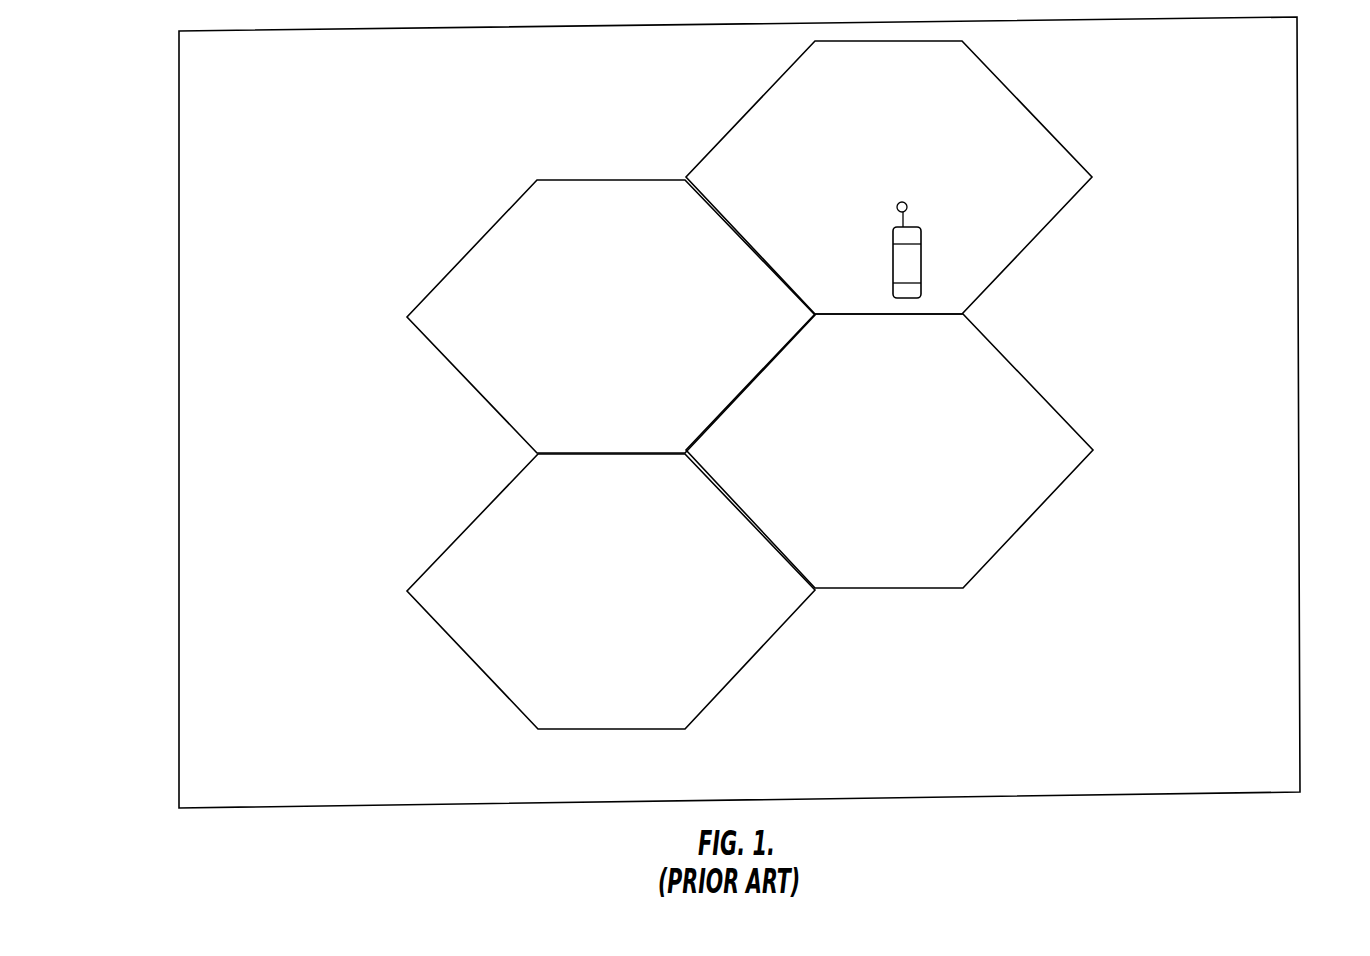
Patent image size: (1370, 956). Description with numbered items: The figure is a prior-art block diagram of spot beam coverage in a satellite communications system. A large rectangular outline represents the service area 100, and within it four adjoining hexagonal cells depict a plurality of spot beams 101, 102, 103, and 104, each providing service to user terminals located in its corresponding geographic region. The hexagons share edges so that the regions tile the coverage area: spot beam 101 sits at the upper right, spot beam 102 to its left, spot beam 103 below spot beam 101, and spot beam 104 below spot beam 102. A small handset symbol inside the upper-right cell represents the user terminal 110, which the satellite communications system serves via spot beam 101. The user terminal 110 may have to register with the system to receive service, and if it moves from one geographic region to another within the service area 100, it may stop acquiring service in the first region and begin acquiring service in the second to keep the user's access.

The service area 100 is at (1298, 176).
The spot beam 101 is at (889, 177).
The spot beam 102 is at (611, 316).
The spot beam 103 is at (889, 451).
The spot beam 104 is at (611, 591).
The user terminal 110 is at (923, 276).